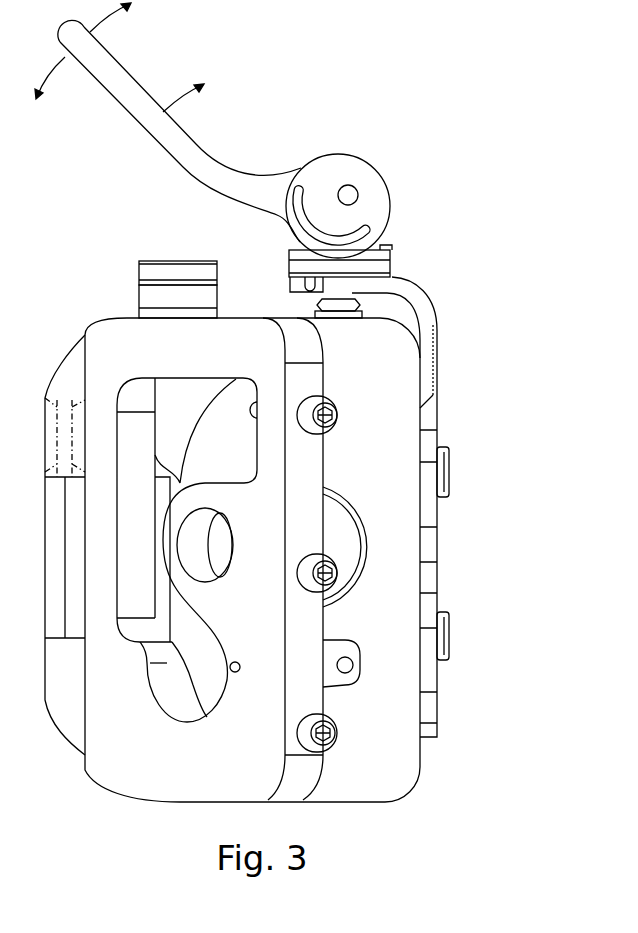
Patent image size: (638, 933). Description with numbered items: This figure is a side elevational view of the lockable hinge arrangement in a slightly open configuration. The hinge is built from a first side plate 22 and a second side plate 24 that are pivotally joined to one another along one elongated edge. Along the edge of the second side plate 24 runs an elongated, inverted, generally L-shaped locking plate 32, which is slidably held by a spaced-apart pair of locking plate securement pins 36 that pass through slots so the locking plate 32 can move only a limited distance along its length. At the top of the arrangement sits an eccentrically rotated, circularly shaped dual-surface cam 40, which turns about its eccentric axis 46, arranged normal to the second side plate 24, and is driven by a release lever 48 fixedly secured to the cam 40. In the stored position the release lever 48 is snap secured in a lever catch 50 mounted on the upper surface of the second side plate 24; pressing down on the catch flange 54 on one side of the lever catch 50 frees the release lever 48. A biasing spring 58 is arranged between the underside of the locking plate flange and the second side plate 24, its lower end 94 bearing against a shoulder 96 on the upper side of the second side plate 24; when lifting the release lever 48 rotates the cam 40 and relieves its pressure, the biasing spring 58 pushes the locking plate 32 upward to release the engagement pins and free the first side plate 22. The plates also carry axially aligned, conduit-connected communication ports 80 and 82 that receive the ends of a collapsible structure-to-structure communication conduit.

The first side plate 22 is at (123, 777).
The second side plate 24 is at (407, 797).
The locking plate 32 is at (428, 310).
The locking plate securement pins 36 is at (440, 445).
The dual-surface cam 40 is at (358, 160).
The eccentric axis 46 is at (352, 194).
The release lever 48 is at (99, 67).
The lever catch 50 is at (140, 288).
The catch flange 54 is at (145, 260).
The biasing spring 58 is at (295, 298).
The communication port 80 is at (207, 575).
The communication port 82 is at (342, 515).
The lower end 94 is at (318, 313).
The shoulder 96 is at (365, 300).